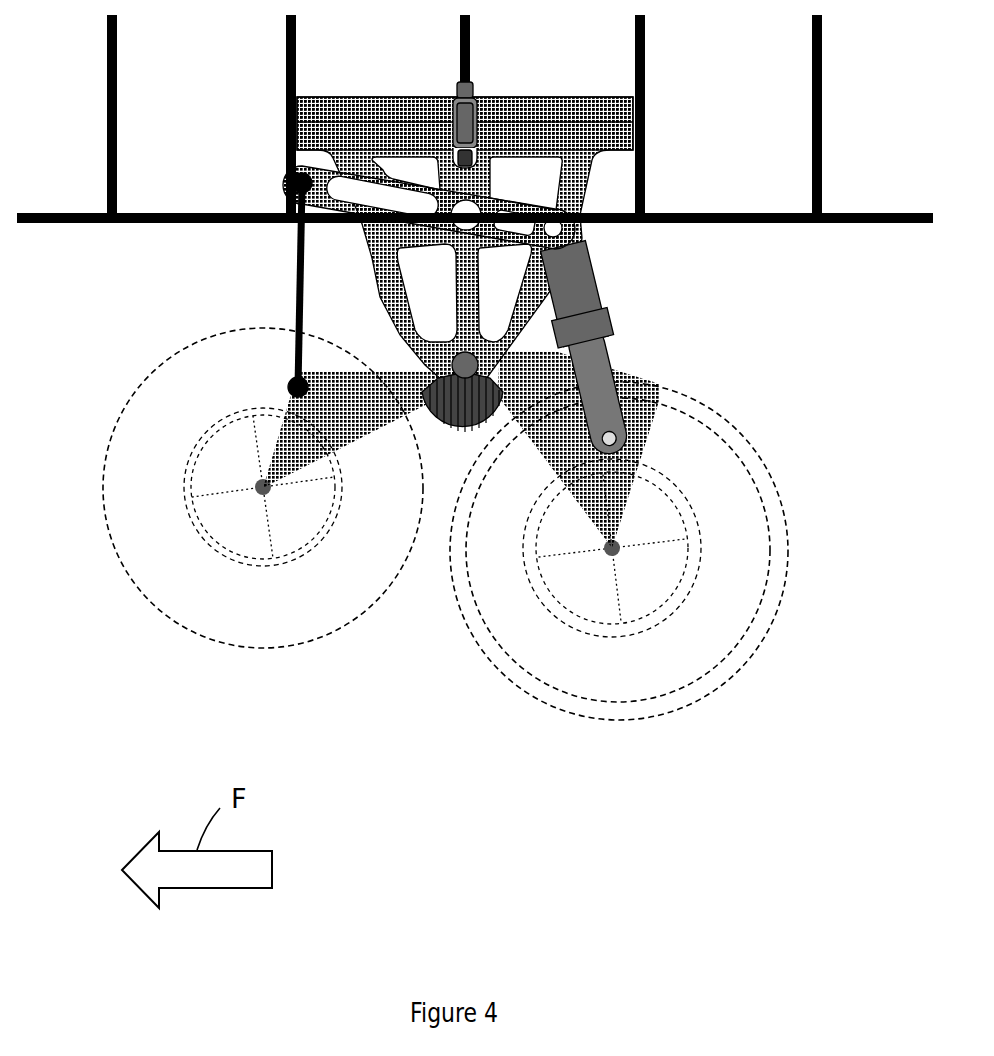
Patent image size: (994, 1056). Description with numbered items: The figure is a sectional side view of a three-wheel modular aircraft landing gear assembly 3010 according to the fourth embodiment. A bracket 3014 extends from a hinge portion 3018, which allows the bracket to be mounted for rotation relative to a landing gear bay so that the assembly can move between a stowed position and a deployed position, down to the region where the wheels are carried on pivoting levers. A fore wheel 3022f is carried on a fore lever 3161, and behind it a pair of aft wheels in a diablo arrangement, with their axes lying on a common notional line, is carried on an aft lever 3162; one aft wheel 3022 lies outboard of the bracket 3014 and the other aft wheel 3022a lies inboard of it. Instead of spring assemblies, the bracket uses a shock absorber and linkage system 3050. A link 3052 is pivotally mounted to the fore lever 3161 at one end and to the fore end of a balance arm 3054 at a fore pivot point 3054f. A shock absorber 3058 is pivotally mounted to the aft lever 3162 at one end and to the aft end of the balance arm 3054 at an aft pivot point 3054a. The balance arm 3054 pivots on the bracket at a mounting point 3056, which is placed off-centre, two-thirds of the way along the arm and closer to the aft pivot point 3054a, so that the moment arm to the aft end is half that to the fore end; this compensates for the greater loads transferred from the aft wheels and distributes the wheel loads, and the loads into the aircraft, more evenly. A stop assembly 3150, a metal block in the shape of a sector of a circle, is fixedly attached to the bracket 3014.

The landing gear assembly 3010 is at (236, 298).
The bracket 3014 is at (588, 160).
The hinge portion 3018 is at (597, 110).
The aft wheel 3022 is at (772, 597).
The aft wheel 3022a is at (720, 495).
The fore wheel 3022f is at (173, 517).
The shock absorber and linkage system 3050 is at (669, 349).
The link 3052 is at (290, 298).
The balance arm 3054 is at (355, 174).
The aft pivot point 3054a is at (566, 229).
The fore pivot point 3054f is at (290, 187).
The mounting point 3056 is at (462, 210).
The shock absorber 3058 is at (580, 295).
The stop assembly 3150 is at (455, 422).
The fore lever 3161 is at (383, 415).
The aft lever 3162 is at (589, 454).